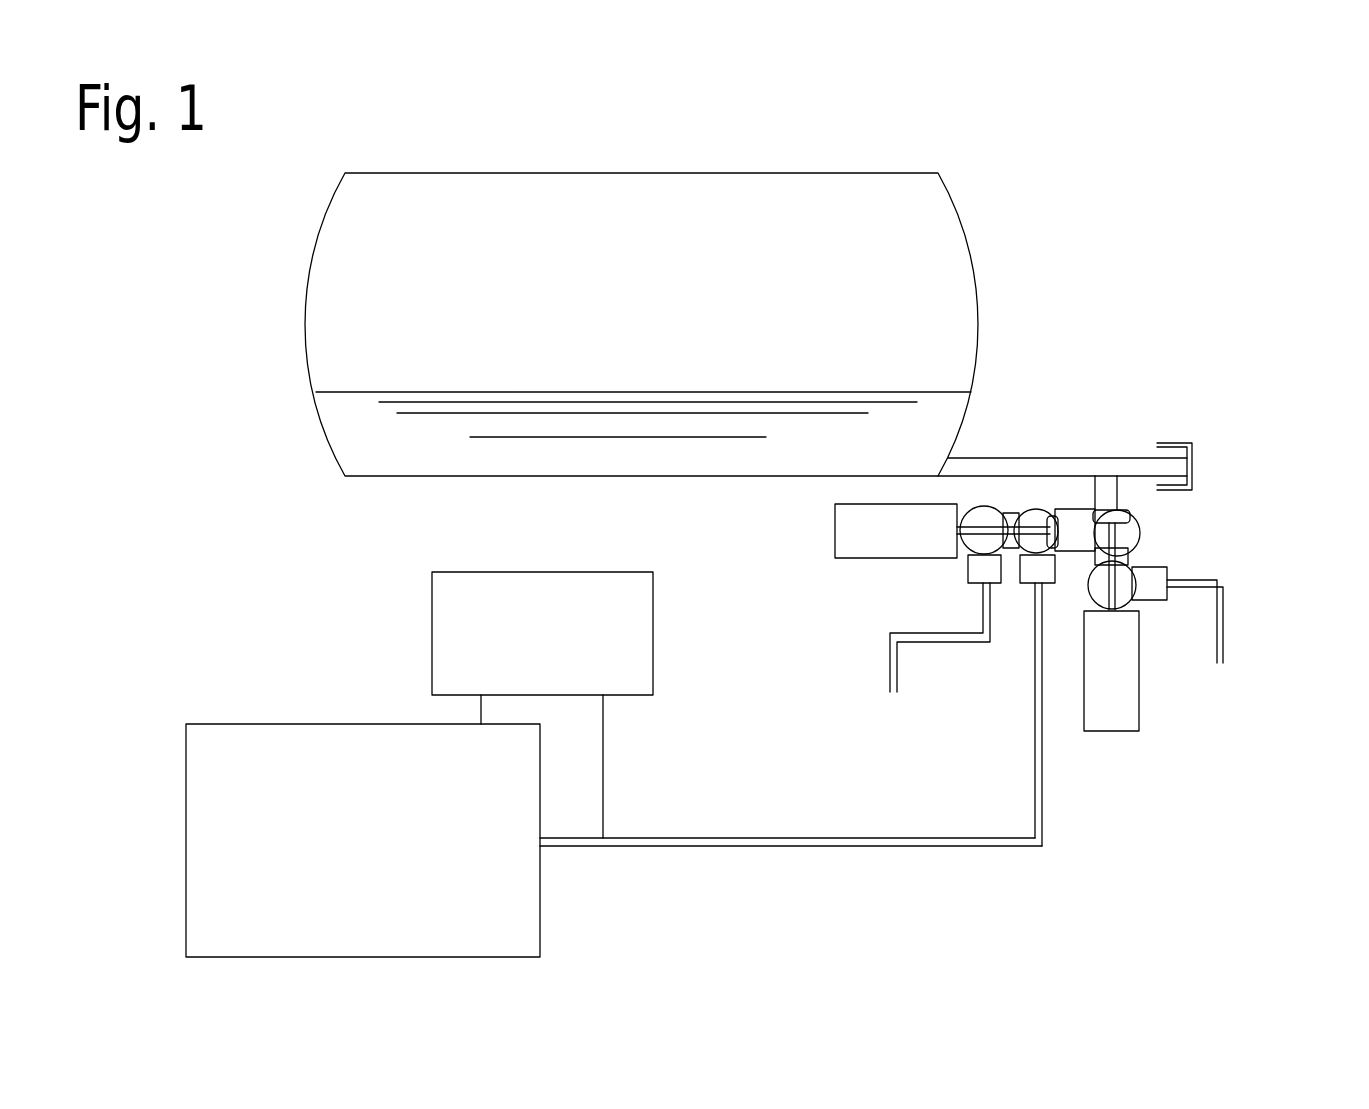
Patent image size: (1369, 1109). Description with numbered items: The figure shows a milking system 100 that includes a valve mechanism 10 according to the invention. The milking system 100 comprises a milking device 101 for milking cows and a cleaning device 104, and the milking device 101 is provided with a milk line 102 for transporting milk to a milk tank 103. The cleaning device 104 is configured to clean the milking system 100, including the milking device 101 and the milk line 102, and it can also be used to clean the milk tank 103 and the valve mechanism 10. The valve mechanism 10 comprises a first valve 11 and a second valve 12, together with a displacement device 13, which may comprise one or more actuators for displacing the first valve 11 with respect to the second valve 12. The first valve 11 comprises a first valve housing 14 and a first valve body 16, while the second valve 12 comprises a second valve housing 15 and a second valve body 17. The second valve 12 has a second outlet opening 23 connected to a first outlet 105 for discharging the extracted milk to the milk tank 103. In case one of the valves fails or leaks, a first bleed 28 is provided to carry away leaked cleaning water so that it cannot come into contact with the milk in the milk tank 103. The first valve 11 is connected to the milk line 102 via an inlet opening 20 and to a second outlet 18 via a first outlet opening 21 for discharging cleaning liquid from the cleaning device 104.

The milking system 100 is at (1108, 328).
The milk tank 103 is at (926, 233).
The first outlet 105 is at (1043, 465).
The second outlet opening 23 is at (1117, 487).
The second valve body 17 is at (1115, 514).
The second valve housing 15 is at (1125, 547).
The second valve 12 is at (1128, 590).
The first bleed 28 is at (1156, 590).
The displacement device 13 is at (1113, 705).
The first valve housing 14 is at (1020, 517).
The first valve body 16 is at (1055, 522).
The first valve 11 is at (1032, 542).
The first outlet opening 21 is at (980, 569).
The second outlet 18 is at (897, 672).
The inlet opening 20 is at (1042, 575).
The cleaning device 104 is at (436, 616).
The milking device 101 is at (262, 745).
The milk line 102 is at (770, 845).
The valve mechanism 10 is at (1218, 557).